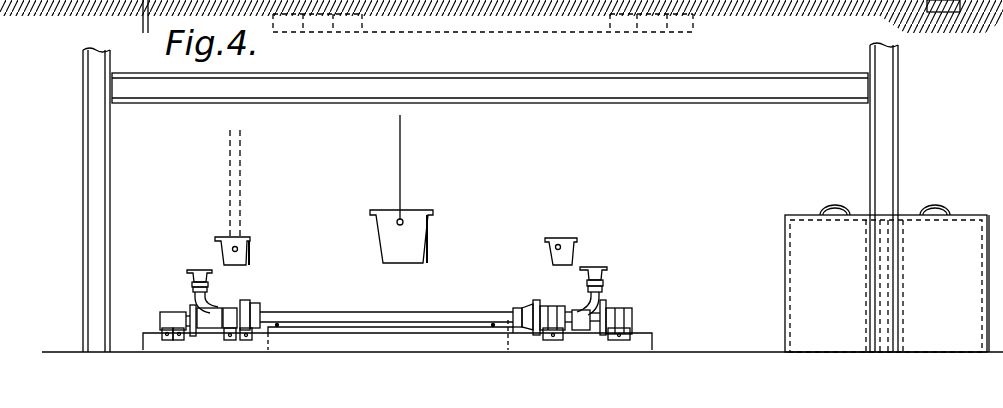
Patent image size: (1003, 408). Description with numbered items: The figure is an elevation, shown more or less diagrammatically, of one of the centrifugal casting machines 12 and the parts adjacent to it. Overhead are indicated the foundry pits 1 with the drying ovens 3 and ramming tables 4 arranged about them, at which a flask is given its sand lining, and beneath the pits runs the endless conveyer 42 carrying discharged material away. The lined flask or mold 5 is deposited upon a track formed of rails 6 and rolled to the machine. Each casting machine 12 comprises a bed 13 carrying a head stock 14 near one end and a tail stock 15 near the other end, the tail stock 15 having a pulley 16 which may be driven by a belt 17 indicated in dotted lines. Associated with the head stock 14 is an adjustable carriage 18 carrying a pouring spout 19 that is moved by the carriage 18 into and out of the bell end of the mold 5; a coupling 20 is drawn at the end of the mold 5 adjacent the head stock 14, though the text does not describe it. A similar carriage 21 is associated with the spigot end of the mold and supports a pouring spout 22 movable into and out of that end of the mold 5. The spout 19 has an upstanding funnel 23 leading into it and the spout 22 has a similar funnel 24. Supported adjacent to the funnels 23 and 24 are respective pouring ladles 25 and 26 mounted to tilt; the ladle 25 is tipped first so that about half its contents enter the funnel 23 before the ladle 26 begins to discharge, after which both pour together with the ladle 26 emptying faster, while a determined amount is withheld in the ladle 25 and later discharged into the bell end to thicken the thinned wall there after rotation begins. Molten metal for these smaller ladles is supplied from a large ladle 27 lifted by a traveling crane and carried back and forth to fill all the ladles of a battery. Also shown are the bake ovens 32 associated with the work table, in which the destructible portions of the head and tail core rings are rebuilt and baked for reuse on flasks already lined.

The pit 1 is at (420, 33).
The drying oven 3 is at (335, 18).
The ramming table 4 is at (303, 18).
The mold 5 is at (362, 312).
The rails 6 is at (278, 324).
The centrifugal casting machine 12 is at (390, 320).
The bed 13 is at (375, 352).
The head stock 14 is at (558, 307).
The tail stock 15 is at (248, 306).
The pulley 16 is at (238, 310).
The belt 17 is at (231, 173).
The adjustable carriage 18 is at (625, 309).
The pouring spout 19 is at (580, 325).
The coupling 20 is at (523, 310).
The carriage 21 is at (172, 312).
The pouring spout 22 is at (212, 320).
The funnel 23 is at (603, 268).
The funnel 24 is at (198, 270).
The pouring ladle 25 is at (569, 238).
The pouring ladle 26 is at (250, 238).
The large ladle 27 is at (423, 240).
The bake oven 32 is at (887, 278).
The endless conveyer 42 is at (50, 8).